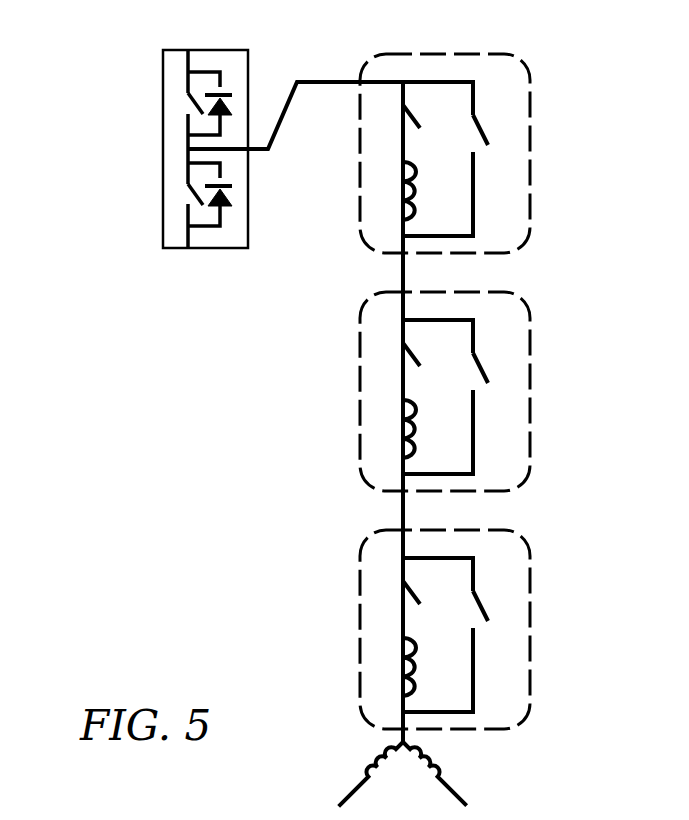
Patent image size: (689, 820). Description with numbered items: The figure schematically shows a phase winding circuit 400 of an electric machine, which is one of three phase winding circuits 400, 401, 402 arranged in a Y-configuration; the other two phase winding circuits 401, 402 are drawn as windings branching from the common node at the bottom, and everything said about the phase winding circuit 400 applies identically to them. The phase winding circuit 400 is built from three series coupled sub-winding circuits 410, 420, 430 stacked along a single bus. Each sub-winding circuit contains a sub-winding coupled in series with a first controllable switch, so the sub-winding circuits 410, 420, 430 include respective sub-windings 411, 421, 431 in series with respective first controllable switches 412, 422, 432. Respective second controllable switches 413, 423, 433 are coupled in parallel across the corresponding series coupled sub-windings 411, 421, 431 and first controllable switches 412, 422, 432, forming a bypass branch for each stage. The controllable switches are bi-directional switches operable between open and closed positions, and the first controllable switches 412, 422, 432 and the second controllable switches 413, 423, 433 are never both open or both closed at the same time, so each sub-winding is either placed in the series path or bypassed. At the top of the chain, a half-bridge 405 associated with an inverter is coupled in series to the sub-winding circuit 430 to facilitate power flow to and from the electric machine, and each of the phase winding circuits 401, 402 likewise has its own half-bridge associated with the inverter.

The phase winding circuit 400 is at (148, 68).
The half-bridge 405 is at (248, 72).
The sub-winding circuit 430 is at (528, 90).
The sub-winding 431 is at (416, 184).
The first controllable switch 432 is at (407, 112).
The second controllable switch 433 is at (488, 145).
The sub-winding circuit 420 is at (528, 328).
The sub-winding 421 is at (416, 422).
The first controllable switch 422 is at (407, 350).
The second controllable switch 423 is at (488, 383).
The sub-winding circuit 410 is at (528, 566).
The sub-winding 411 is at (416, 660).
The first controllable switch 412 is at (407, 588).
The second controllable switch 413 is at (488, 621).
The phase winding circuit 401 is at (350, 770).
The phase winding circuit 402 is at (465, 780).